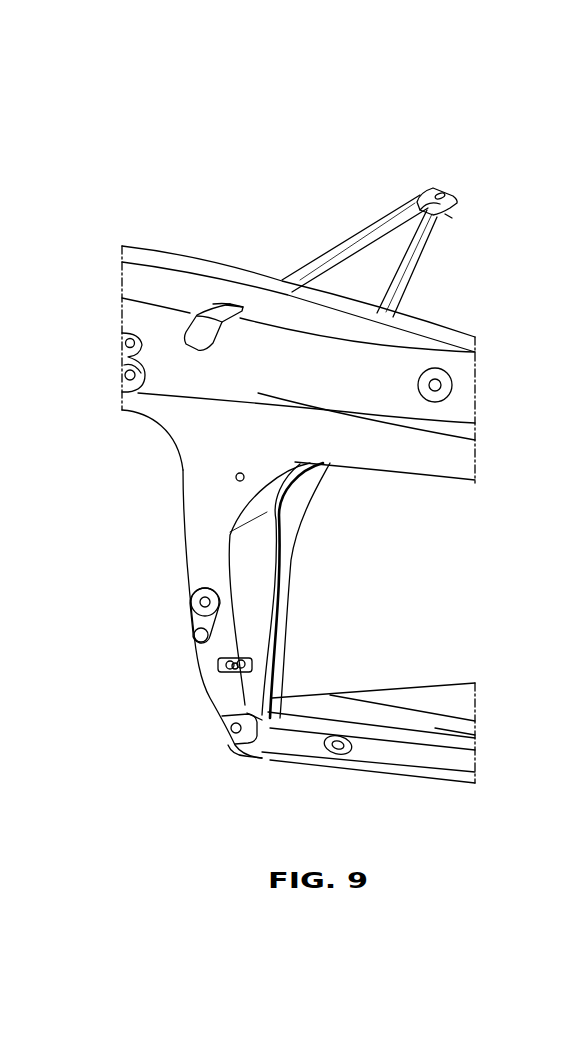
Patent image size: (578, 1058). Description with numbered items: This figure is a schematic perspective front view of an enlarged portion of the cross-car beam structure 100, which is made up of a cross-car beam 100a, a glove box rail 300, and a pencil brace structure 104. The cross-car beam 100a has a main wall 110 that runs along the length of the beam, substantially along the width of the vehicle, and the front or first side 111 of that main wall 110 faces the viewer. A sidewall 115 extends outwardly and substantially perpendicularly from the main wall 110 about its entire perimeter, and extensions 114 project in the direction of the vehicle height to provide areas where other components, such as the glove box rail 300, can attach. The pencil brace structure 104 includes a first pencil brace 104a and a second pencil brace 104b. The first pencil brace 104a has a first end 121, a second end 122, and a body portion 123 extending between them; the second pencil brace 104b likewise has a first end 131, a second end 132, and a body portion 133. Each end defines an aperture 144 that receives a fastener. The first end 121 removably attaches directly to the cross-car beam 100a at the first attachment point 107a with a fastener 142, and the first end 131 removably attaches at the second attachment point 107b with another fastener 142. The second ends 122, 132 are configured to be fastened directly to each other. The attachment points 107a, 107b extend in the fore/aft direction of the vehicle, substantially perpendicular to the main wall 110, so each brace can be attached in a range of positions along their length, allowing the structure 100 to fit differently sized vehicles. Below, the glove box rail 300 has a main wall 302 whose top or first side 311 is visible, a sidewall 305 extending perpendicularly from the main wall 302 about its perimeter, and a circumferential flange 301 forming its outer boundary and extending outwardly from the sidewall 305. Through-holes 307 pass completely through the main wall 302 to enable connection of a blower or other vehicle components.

The cross-car beam structure 100 is at (360, 126).
The cross-car beam 100a is at (428, 488).
The pencil brace structure 104 is at (294, 268).
The first pencil brace 104a is at (328, 245).
The second pencil brace 104b is at (410, 304).
The first attachment point 107a is at (220, 317).
The second attachment point 107b is at (232, 670).
The main wall 110 is at (200, 458).
The first side 111 is at (193, 522).
The extensions 114 is at (255, 630).
The sidewall 115 is at (147, 273).
The first end 121 is at (130, 310).
The second end 122 is at (430, 190).
The body portion 123 is at (376, 227).
The first end 131 is at (230, 670).
The second end 132 is at (450, 218).
The body portion 133 is at (310, 522).
The fastener 142 is at (236, 303).
The aperture 144 is at (452, 197).
The glove box rail 300 is at (445, 792).
The circumferential flange 301 is at (393, 773).
The main wall 302 is at (418, 697).
The sidewall 305 is at (476, 735).
The through-holes 307 is at (338, 760).
The first side 311 is at (448, 697).